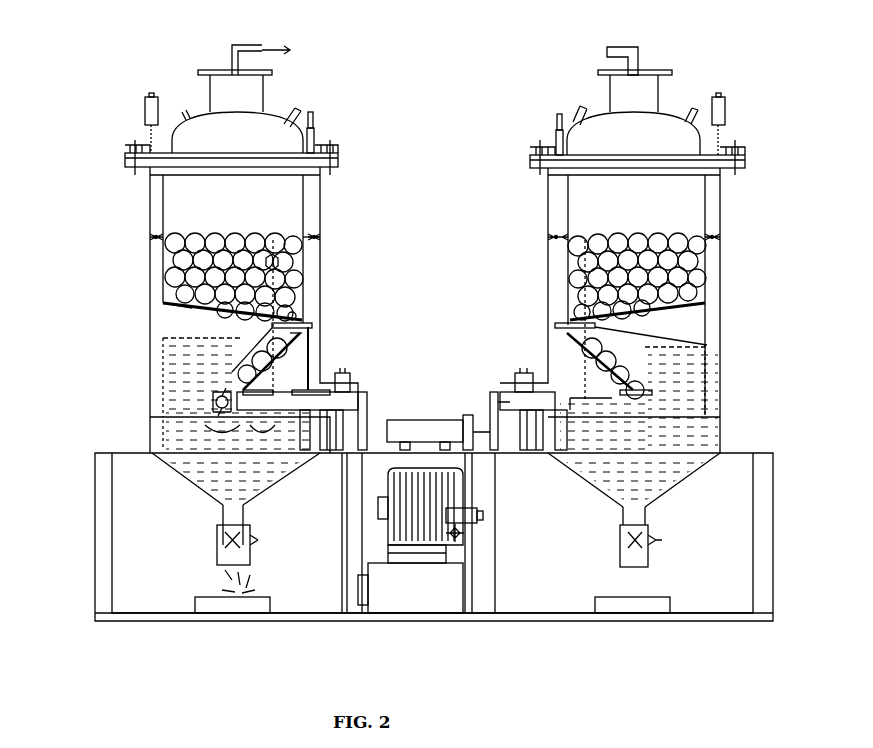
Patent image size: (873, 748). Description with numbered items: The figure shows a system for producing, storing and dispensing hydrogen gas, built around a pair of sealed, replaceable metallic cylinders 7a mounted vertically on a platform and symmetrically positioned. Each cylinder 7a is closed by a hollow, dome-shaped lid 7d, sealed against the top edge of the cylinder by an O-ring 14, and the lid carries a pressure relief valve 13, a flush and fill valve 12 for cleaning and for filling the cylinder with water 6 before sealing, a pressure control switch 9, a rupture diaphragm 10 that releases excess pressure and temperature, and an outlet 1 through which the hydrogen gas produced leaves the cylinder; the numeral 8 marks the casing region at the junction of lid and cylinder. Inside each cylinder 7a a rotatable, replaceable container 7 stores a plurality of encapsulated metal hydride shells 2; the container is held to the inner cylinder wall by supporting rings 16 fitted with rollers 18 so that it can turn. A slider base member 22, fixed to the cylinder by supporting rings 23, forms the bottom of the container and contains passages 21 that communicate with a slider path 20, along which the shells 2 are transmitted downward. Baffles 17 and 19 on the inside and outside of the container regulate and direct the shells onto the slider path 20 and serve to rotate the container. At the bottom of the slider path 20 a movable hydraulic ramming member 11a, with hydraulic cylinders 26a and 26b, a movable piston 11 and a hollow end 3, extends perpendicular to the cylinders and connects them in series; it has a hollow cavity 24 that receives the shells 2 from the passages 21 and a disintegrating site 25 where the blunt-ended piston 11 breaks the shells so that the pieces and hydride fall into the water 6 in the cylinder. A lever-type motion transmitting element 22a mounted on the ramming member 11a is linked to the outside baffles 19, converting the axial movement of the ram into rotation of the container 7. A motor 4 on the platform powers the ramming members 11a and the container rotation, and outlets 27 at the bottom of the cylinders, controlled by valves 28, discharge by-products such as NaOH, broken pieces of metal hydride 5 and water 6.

The outlet 1 is at (283, 51).
The encapsulated metal hydride shell 2 is at (296, 316).
The hollow end 3 is at (165, 378).
The motor 4 is at (417, 520).
The broken pieces of metal hydride 5 is at (218, 562).
The water 6 is at (165, 393).
The rotatable container 7 is at (163, 270).
The metallic cylinder 7a is at (150, 222).
The lid 7d is at (188, 115).
The treatment vessel 8 is at (172, 165).
The pressure control switch 9 is at (150, 103).
The rupture diaphragm 10 is at (180, 112).
The movable piston 11 is at (340, 393).
The hydraulic ramming member 11a is at (428, 427).
The flush and fill valve 12 is at (290, 115).
The pressure relief valve 13 is at (310, 115).
The O-ring 14 is at (345, 152).
The supporting ring 16 is at (322, 239).
The baffle 17 is at (192, 308).
The roller 18 is at (322, 236).
The baffle 19 is at (272, 262).
The slider path 20 is at (243, 388).
The passage 21 is at (298, 372).
The slider base member 22 is at (262, 372).
The motion transmitting element 22a is at (280, 262).
The supporting ring 23 is at (170, 415).
The hollow cavity 24 is at (215, 402).
The disintegrating site 25 is at (225, 405).
The hydraulic cylinder 26a is at (362, 453).
The hydraulic cylinder 26b is at (495, 453).
The outlet 27 is at (223, 512).
The valve 28 is at (253, 545).